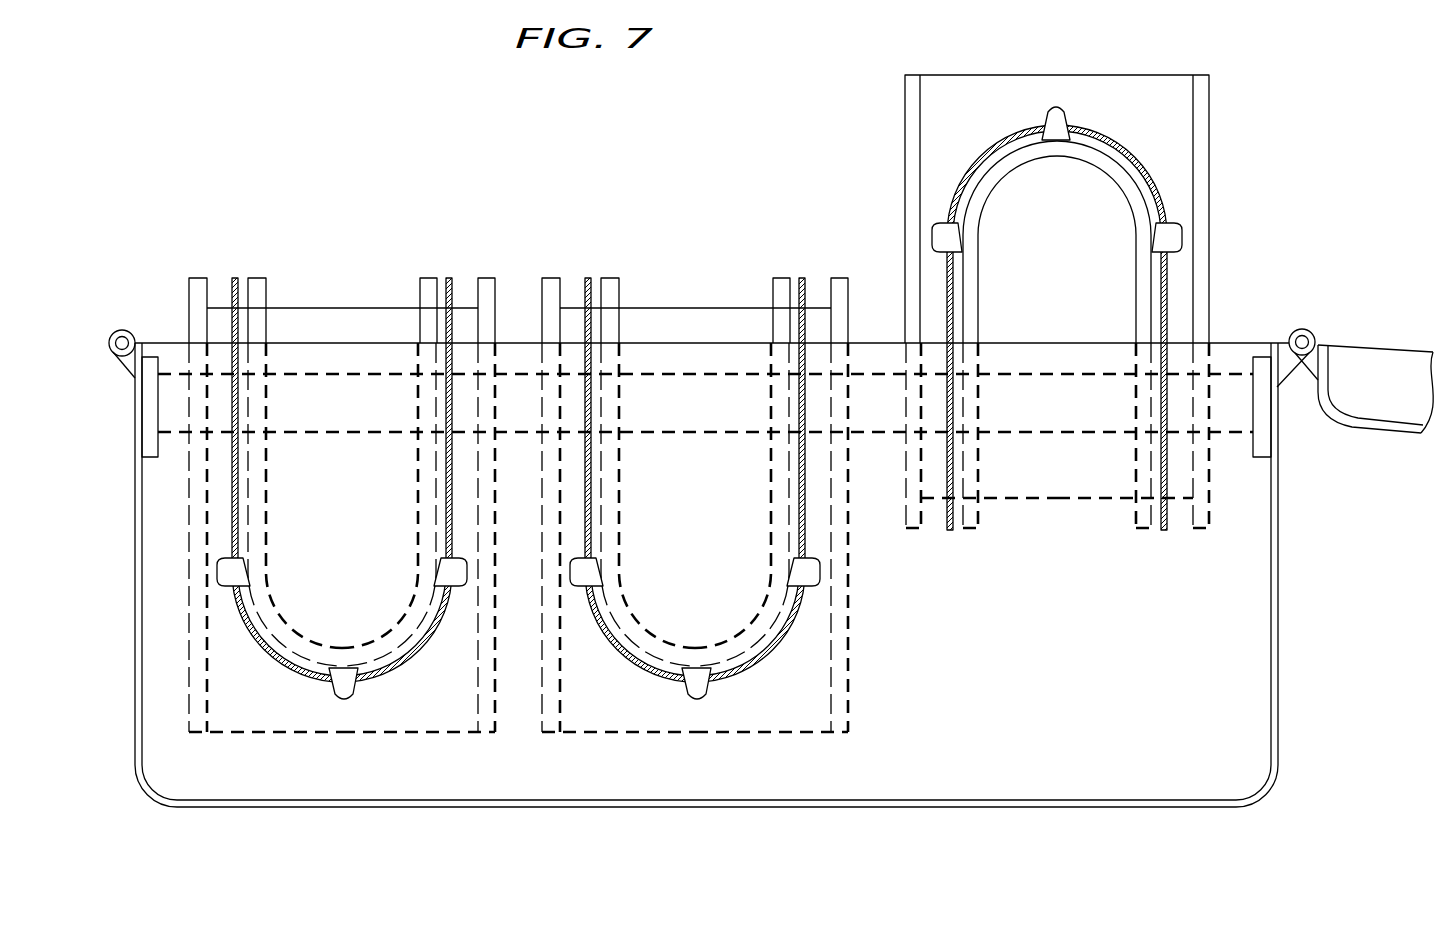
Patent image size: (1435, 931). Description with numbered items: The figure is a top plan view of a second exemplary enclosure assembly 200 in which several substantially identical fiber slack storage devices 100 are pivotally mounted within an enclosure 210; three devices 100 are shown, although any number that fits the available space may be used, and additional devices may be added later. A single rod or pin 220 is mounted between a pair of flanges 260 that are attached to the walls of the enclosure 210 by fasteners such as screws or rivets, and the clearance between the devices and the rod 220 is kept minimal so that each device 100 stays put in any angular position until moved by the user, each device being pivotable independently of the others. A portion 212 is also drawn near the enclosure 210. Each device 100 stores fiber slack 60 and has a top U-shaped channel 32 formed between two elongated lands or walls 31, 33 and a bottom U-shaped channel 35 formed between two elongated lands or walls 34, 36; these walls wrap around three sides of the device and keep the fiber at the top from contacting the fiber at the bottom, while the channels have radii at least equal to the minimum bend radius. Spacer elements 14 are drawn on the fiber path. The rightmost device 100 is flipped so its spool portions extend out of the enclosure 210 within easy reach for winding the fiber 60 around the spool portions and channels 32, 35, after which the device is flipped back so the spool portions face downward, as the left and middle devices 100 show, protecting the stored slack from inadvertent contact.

The enclosure assembly 200 is at (563, 91).
The enclosure 210 is at (1103, 808).
The lid 212 is at (1370, 433).
The flanges 260 is at (148, 458).
The rod or pin 220 is at (357, 435).
The device 100 is at (350, 268).
The bottom U-shaped channel 35 is at (623, 403).
The elongated land or wall 36 is at (207, 281).
The elongated land or wall 34 is at (247, 283).
The top U-shaped channel 32 is at (775, 403).
The elongated land or wall 31 is at (435, 281).
The elongated land or wall 33 is at (475, 283).
The fiber slack 60 is at (453, 472).
The spacer collar 14 is at (332, 690).